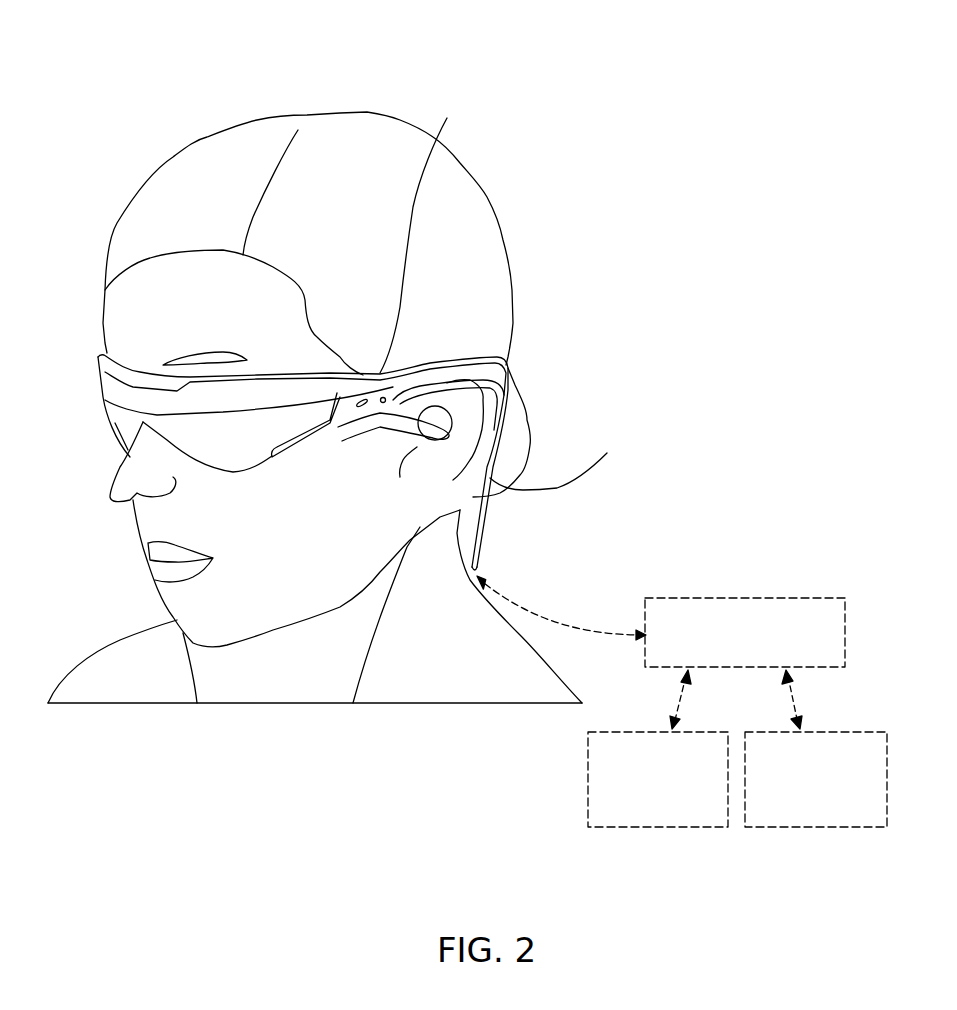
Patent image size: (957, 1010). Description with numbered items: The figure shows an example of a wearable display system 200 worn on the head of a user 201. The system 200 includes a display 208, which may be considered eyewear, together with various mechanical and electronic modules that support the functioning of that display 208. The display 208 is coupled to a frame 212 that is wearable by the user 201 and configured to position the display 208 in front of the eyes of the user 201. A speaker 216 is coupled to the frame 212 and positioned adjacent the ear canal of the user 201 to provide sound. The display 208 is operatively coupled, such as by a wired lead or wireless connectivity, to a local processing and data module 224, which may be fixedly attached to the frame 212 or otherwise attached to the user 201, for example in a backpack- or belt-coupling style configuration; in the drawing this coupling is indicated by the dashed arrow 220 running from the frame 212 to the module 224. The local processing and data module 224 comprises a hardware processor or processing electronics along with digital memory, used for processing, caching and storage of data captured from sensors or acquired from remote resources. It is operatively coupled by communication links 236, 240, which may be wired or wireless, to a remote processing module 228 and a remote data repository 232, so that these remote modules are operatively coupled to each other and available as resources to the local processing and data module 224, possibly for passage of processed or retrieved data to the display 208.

The wearable display system 200 is at (268, 57).
The user 201 is at (190, 155).
The display 208 is at (117, 418).
The frame 212 is at (433, 147).
The speaker 216 is at (448, 423).
The communicative link 220 is at (502, 602).
The local processing and data module 224 is at (740, 596).
The remote processing module 228 is at (662, 827).
The remote data repository 232 is at (810, 827).
The communication link 236 is at (680, 688).
The communication link 240 is at (798, 705).